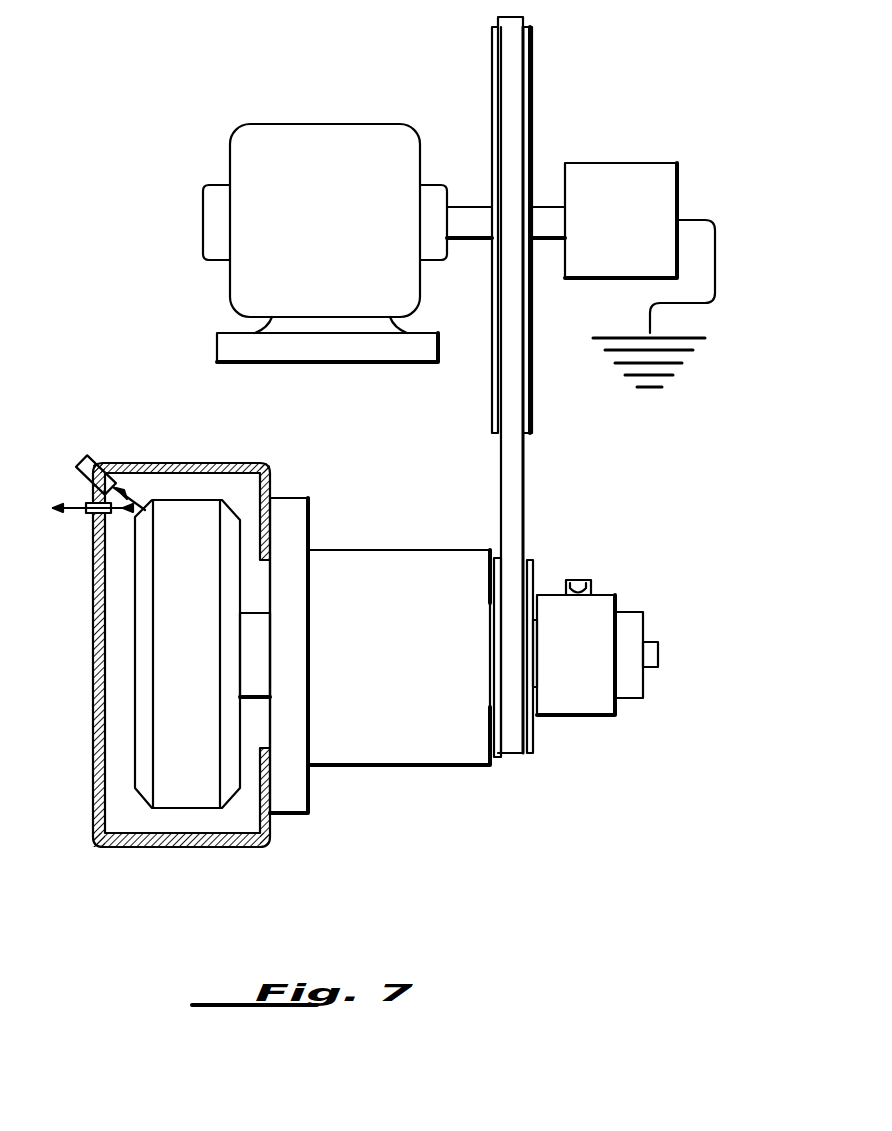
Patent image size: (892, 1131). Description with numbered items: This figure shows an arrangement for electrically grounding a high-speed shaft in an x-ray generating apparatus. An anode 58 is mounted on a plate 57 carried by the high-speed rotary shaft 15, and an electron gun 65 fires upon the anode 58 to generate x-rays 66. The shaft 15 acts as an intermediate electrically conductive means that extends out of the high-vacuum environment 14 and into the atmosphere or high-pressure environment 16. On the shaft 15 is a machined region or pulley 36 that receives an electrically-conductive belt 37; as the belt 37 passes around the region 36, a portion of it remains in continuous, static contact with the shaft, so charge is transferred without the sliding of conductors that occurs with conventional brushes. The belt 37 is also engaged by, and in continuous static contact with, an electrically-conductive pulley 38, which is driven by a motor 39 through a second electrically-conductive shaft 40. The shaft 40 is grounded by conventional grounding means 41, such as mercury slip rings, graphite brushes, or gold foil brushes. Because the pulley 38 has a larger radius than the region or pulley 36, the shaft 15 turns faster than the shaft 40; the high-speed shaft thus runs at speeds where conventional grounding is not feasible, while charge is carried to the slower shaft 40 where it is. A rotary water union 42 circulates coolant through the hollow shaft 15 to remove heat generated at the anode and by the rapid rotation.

The high-vacuum environment 14 is at (135, 482).
The high-speed rotary shaft 15 is at (255, 653).
The atmosphere or high-pressure environment 16 is at (655, 547).
The machined region or pulley 36 is at (530, 563).
The electrically-conductive belt 37 is at (513, 483).
The electrically-conductive pulley 38 is at (530, 63).
The motor 39 is at (345, 232).
The second electrically-conductive shaft 40 is at (550, 220).
The conventional grounding means 41 is at (640, 275).
The rotary water union 42 is at (575, 702).
The plate 57 is at (165, 743).
The anode 58 is at (145, 700).
The electron gun 65 is at (90, 457).
The x-rays 66 is at (72, 513).